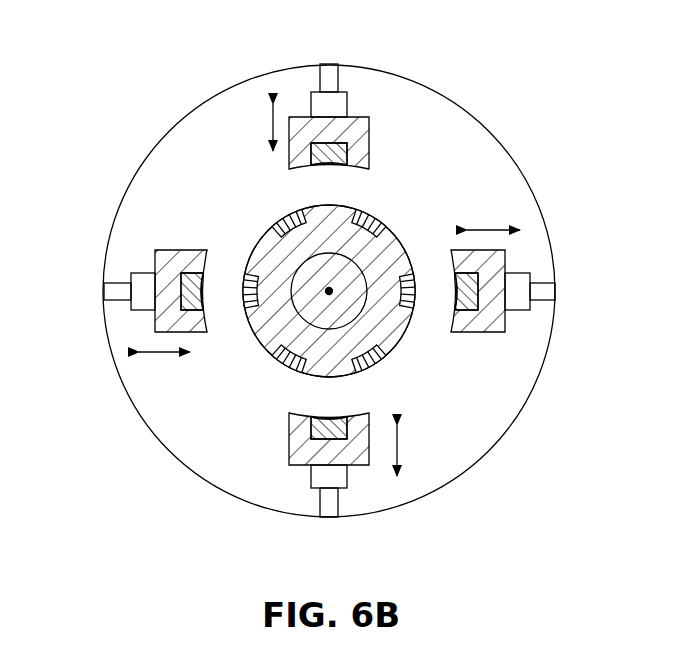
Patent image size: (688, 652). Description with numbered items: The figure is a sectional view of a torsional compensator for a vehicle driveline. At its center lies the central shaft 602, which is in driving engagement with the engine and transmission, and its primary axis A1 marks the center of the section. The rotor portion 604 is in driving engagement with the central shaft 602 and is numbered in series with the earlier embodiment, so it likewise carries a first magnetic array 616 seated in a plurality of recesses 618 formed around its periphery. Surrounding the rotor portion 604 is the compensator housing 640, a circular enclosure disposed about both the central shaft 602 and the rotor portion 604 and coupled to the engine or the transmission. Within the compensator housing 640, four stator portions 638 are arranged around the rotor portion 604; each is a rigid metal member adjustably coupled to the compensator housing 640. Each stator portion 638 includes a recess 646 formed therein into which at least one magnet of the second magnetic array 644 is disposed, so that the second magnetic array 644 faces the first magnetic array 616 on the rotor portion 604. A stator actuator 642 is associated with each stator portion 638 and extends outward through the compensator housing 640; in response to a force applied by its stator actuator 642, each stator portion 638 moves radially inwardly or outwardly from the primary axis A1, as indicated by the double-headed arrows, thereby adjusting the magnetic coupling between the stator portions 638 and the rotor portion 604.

The central shaft 602 is at (404, 248).
The rotor portion 604 is at (353, 280).
The first magnetic array 616 is at (303, 208).
The recesses 618 is at (262, 322).
The stator portions 638 is at (370, 145).
The compensator housing 640 is at (507, 437).
The stator actuators 642 is at (338, 80).
The second magnetic array 644 is at (327, 168).
The recess 646 is at (348, 157).
The primary axis A1 is at (329, 290).